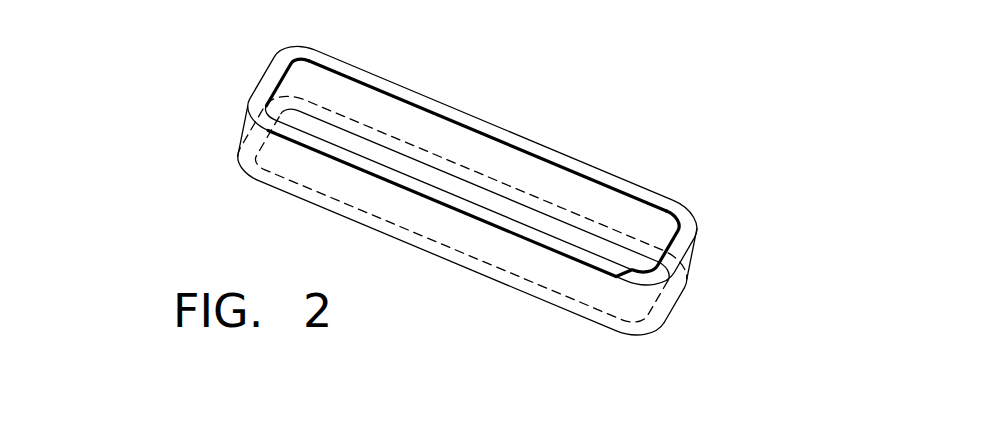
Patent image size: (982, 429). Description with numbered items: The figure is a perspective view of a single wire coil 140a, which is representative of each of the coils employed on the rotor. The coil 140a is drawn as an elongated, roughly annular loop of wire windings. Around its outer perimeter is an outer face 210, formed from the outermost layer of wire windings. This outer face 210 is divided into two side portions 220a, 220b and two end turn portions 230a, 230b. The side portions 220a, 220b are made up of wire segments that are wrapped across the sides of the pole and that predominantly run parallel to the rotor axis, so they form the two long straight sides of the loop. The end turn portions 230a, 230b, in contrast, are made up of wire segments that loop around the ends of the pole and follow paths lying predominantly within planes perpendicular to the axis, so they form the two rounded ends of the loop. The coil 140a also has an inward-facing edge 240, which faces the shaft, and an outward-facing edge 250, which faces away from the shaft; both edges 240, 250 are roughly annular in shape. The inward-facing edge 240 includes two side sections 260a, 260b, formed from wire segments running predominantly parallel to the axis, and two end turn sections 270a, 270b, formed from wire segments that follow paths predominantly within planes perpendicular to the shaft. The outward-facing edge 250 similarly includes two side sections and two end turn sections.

The coil 140a is at (160, 158).
The outer face 210 is at (272, 160).
The side portion 220a is at (288, 186).
The side portion 220b is at (382, 90).
The end turn portion 230a is at (264, 100).
The end turn portion 230b is at (707, 258).
The inward-facing edge 240 is at (488, 123).
The outward-facing edge 250 is at (398, 245).
The side section 260a is at (483, 208).
The side section 260b is at (548, 155).
The end turn section 270a is at (280, 84).
The end turn section 270b is at (667, 240).